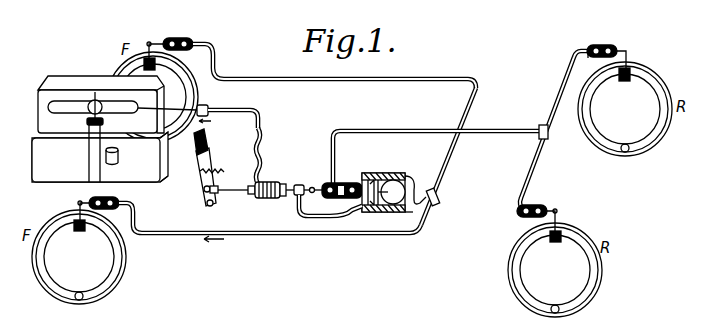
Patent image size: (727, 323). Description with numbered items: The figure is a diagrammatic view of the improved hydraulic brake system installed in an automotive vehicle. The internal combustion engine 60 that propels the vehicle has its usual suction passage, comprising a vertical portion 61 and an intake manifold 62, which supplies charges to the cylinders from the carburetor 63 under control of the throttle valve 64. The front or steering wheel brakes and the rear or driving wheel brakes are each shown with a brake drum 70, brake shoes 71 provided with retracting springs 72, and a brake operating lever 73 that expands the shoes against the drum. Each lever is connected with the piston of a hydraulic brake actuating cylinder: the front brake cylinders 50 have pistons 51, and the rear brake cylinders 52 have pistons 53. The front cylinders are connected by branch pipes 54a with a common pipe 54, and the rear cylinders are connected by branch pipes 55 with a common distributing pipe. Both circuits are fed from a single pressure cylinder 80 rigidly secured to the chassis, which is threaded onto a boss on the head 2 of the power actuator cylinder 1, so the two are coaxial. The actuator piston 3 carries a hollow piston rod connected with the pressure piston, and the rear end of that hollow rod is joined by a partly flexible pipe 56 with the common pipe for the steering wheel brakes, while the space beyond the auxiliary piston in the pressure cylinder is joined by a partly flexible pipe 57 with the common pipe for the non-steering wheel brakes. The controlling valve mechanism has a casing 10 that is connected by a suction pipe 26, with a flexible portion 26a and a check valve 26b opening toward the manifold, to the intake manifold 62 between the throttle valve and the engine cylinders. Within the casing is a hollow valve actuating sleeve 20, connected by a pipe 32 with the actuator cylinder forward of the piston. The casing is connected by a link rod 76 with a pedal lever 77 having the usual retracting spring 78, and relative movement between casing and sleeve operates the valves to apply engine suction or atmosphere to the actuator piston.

The actuator cylinder 1 is at (392, 185).
The head 2 is at (372, 180).
The actuator piston 3 is at (382, 207).
The casing 10 is at (270, 186).
The valve actuating sleeve 20 is at (302, 182).
The suction pipe 26 is at (247, 109).
The flexible portion of suction pipe 26a is at (263, 133).
The check valve 26b is at (212, 121).
The pipe 32 is at (354, 220).
The front wheel brake cylinder 50 is at (184, 34).
The front brake cylinder piston 51 is at (201, 44).
The rear wheel brake cylinder 52 is at (603, 45).
The rear brake cylinder piston 53 is at (594, 60).
The common pipe 54 is at (467, 112).
The branch pipe 54a is at (283, 238).
The branch pipe 55 is at (532, 164).
The flexible pipe 56 is at (427, 207).
The flexible pipe 57 is at (331, 164).
The internal combustion engine 60 is at (33, 157).
The vertical portion of suction passage 61 is at (92, 150).
The intake manifold 62 is at (95, 100).
The carburetor 63 is at (118, 156).
The throttle valve 64 is at (93, 128).
The brake drum 70 is at (193, 92).
The brake shoes 71 is at (184, 76).
The retracting springs 72 is at (80, 232).
The brake operating lever 73 is at (78, 204).
The link rod 76 is at (239, 192).
The pedal lever 77 is at (195, 178).
The retracting spring 78 is at (222, 167).
The pressure cylinder 80 is at (345, 183).